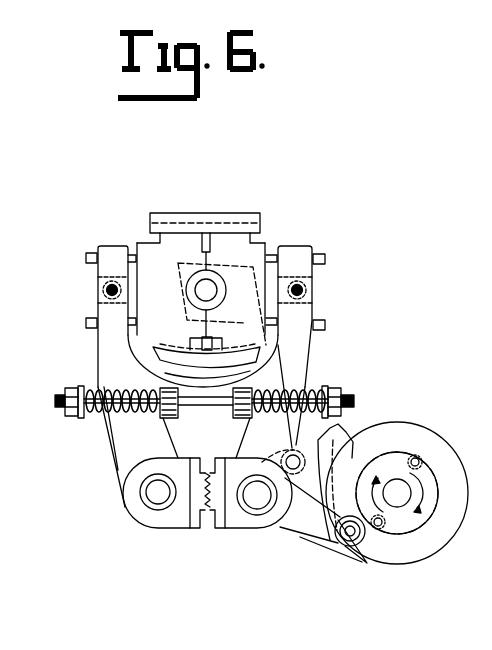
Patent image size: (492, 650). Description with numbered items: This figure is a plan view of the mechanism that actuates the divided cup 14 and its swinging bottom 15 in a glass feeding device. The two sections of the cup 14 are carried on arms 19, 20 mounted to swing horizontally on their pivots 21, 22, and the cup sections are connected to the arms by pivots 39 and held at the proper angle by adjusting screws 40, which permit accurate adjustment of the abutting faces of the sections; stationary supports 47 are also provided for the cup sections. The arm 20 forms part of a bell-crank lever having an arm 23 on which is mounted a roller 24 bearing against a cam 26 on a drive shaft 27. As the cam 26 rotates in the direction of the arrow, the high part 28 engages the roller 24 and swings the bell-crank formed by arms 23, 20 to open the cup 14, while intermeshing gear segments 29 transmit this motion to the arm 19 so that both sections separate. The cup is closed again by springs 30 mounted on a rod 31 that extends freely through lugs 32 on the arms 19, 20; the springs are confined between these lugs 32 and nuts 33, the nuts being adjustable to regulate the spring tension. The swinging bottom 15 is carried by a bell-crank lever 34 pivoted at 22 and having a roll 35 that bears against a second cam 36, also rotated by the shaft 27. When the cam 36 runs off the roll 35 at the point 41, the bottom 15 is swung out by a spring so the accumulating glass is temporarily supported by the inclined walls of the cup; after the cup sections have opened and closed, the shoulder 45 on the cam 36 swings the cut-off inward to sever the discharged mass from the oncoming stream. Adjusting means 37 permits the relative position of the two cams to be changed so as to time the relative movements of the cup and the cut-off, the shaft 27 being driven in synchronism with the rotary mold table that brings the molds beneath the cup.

The divided cup 14 is at (267, 252).
The bottom 15 is at (184, 300).
The arm 19 is at (98, 357).
The arm 20 is at (306, 353).
The pivot 21 is at (156, 490).
The pivot 22 is at (254, 500).
The arm 23 is at (308, 528).
The roller 24 is at (356, 543).
The cam 26 is at (414, 540).
The drive shaft 27 is at (406, 494).
The high part of the cam 28 is at (358, 463).
The intermeshing gear segments 29 is at (207, 512).
The springs 30 is at (94, 420).
The rod 31 is at (201, 410).
The lugs 32 is at (170, 391).
The nuts 33 is at (66, 414).
The bell-crank lever 34 is at (252, 362).
The roll 35 is at (300, 452).
The cam 36 is at (322, 556).
The adjusting means 37 is at (420, 460).
The pivots 39 is at (103, 291).
The adjusting screws 40 is at (86, 257).
The point 41 is at (158, 352).
The shoulder 45 is at (342, 428).
The stationary supports 47 is at (169, 216).